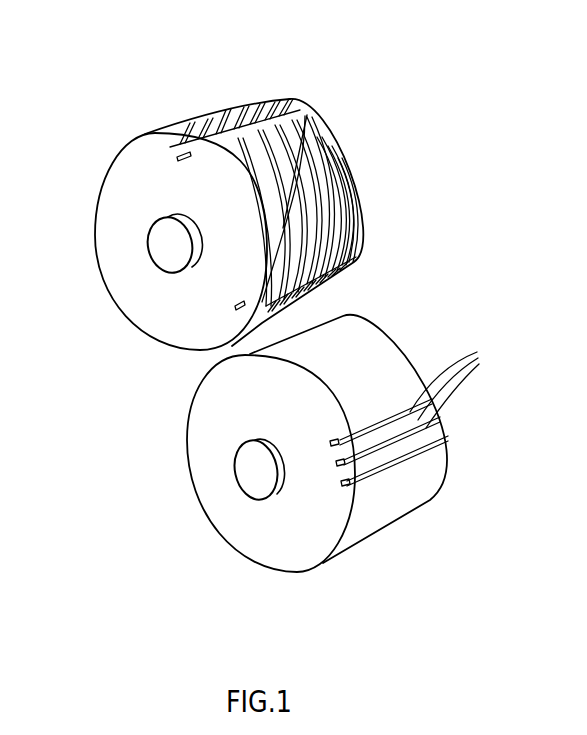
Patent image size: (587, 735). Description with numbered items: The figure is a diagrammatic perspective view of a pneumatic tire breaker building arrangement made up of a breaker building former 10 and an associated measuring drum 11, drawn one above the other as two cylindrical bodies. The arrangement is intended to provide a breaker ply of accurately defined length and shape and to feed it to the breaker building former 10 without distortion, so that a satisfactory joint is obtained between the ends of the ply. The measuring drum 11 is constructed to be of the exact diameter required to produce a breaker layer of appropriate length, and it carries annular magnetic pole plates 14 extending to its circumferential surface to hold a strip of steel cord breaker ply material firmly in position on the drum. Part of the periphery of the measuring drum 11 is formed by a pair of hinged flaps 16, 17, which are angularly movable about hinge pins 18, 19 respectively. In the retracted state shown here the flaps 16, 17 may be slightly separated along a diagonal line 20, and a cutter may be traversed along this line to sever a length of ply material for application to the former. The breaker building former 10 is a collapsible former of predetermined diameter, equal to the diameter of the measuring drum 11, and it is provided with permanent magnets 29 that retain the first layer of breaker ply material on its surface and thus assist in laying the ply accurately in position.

The breaker building former 10 is at (238, 533).
The measuring drum 11 is at (120, 278).
The annular magnetic pole plates 14 is at (247, 110).
The hinged flap 16 is at (257, 212).
The hinged flap 17 is at (353, 226).
The hinge pin 18 is at (180, 153).
The hinge pin 19 is at (238, 304).
The diagonal line 20 is at (305, 134).
The permanent magnets 29 is at (427, 411).